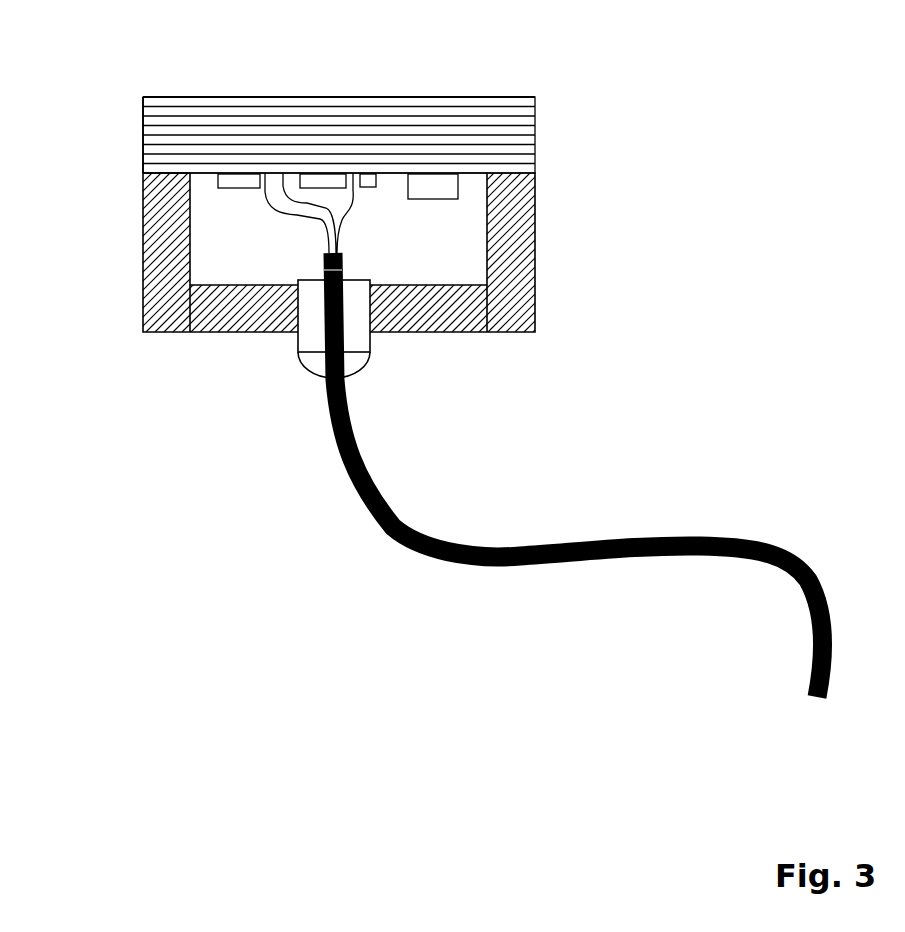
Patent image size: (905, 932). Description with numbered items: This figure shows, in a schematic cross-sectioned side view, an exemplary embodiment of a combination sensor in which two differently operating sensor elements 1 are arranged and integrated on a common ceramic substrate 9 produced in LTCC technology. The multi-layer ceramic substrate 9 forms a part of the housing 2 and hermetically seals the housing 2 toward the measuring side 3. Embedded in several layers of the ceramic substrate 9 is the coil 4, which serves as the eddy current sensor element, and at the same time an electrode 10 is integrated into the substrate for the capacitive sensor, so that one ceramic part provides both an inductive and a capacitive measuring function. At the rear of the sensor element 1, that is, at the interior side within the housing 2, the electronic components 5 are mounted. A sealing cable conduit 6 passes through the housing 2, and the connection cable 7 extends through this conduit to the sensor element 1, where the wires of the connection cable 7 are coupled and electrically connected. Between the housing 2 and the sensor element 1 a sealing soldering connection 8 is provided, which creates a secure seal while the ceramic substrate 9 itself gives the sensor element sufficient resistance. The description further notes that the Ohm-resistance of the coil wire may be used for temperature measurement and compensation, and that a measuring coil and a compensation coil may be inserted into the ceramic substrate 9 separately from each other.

The sensor element 1 is at (598, 70).
The housing 2 is at (535, 258).
The measuring side 3 is at (208, 82).
The coil 4 is at (508, 133).
The electronic components 5 is at (475, 185).
The sealing cable conduit 6 is at (288, 365).
The connection cable 7 is at (362, 523).
The sealing soldering connection 8 is at (137, 178).
The ceramic substrate 9 is at (143, 140).
The electrode 10 is at (323, 100).